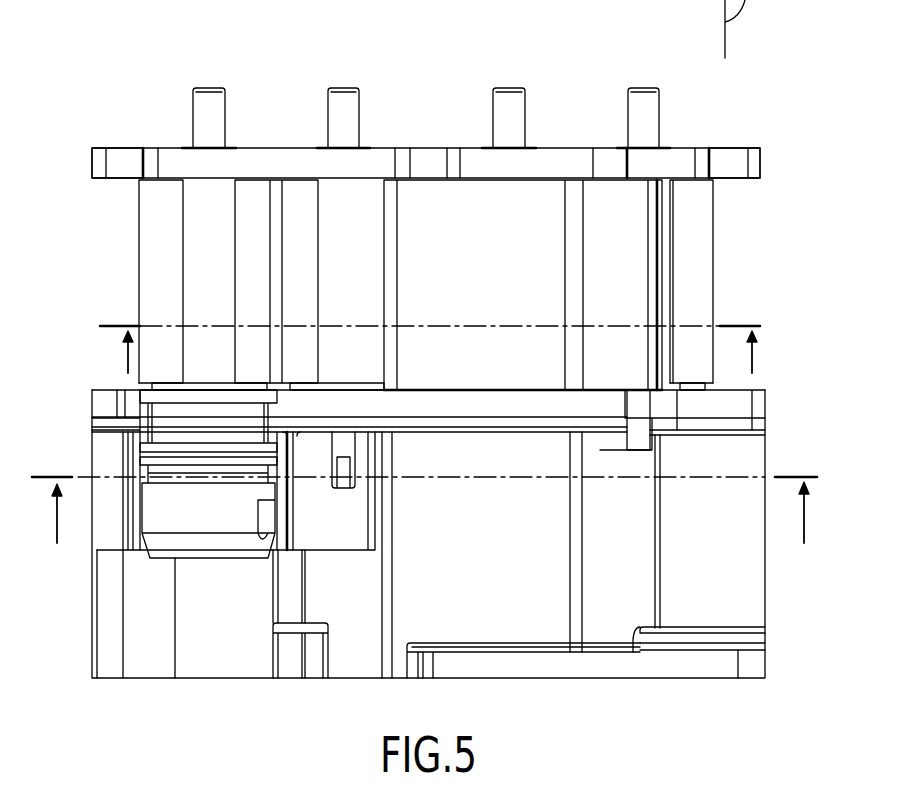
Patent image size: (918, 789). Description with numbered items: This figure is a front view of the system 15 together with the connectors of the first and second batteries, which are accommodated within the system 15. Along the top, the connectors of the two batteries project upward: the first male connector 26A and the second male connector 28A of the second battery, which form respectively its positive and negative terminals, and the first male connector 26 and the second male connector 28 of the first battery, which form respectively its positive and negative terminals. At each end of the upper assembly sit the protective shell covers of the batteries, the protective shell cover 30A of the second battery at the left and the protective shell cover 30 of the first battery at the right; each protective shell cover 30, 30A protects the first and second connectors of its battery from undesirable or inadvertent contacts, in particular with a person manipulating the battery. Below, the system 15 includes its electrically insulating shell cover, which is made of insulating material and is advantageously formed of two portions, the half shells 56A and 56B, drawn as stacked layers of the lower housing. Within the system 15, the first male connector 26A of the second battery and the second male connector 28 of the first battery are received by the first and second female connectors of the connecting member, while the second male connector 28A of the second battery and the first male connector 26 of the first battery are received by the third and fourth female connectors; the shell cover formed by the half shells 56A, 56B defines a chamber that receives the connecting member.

The system 15 is at (93, 258).
The first male connector 26 is at (513, 118).
The first male connector 26A is at (338, 118).
The second male connector 28 is at (639, 118).
The second male connector 28A is at (201, 118).
The protective shell cover 30 is at (727, 160).
The protective shell cover 30A is at (122, 155).
The half shell 56A is at (738, 405).
The half shell 56B is at (730, 425).